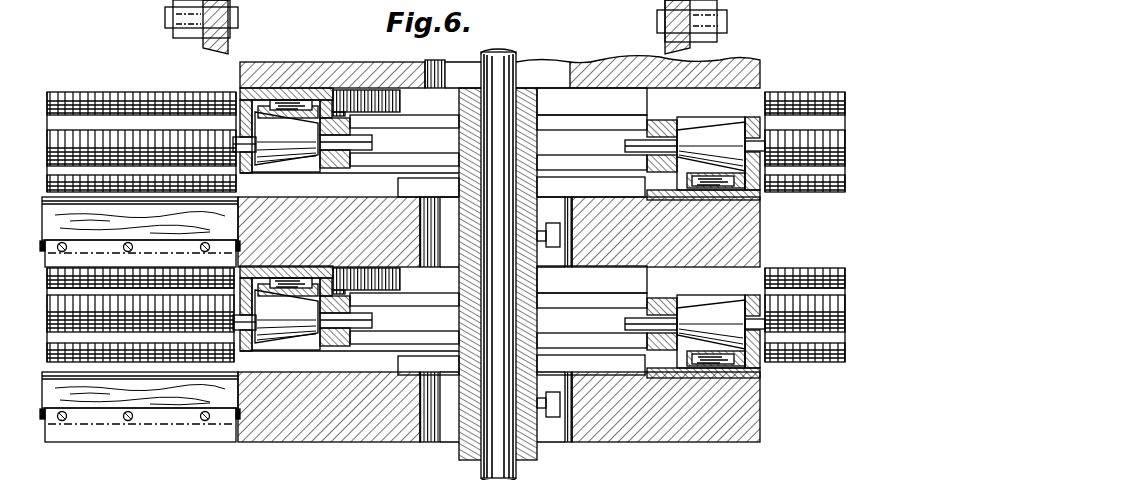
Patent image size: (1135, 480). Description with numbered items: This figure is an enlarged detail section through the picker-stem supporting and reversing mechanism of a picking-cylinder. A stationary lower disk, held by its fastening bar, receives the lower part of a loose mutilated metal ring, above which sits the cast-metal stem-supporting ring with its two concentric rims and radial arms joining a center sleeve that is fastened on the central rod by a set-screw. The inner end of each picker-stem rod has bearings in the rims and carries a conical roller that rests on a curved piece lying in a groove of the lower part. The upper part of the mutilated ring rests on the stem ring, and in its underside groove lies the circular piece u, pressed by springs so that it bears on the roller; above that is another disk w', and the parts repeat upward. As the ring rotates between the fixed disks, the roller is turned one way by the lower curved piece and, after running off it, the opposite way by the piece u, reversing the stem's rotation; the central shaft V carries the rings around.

The main vertical shaft V is at (498, 250).
The circular piece u is at (332, 64).
The disk w' is at (568, 64).